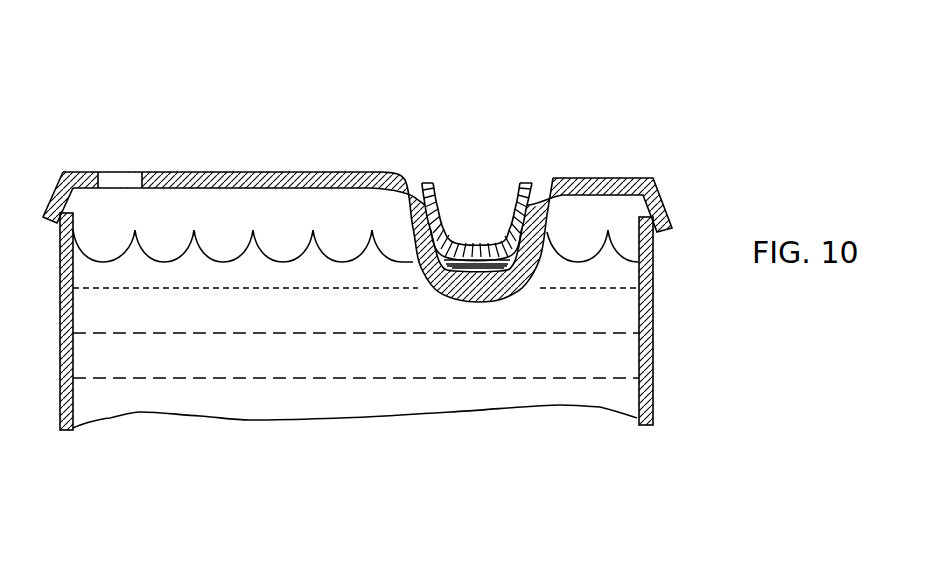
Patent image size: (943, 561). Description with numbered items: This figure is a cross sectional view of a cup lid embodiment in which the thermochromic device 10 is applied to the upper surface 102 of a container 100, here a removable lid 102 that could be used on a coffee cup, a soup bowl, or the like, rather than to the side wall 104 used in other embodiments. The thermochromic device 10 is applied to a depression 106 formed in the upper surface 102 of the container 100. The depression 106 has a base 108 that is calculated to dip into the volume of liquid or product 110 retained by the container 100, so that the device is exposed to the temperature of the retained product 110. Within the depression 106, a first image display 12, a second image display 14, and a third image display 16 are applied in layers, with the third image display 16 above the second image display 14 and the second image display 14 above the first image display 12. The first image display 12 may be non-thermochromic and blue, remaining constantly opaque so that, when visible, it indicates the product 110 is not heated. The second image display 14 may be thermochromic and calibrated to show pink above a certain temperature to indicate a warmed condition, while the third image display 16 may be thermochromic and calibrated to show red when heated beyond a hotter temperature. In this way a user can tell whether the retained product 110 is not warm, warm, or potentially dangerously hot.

The thermochromic device 10 is at (520, 247).
The first image display 12 is at (433, 259).
The second image display 14 is at (465, 270).
The third image display 16 is at (455, 255).
The container 100 is at (405, 241).
The upper surface 102 is at (158, 172).
The side wall 104 is at (655, 255).
The depression 106 is at (542, 248).
The base 108 is at (466, 282).
The liquid or product 110 is at (283, 363).